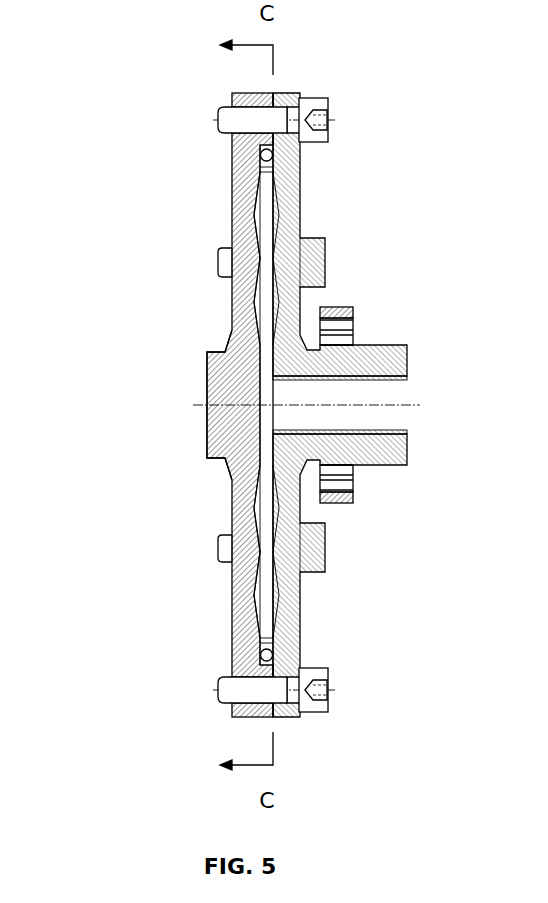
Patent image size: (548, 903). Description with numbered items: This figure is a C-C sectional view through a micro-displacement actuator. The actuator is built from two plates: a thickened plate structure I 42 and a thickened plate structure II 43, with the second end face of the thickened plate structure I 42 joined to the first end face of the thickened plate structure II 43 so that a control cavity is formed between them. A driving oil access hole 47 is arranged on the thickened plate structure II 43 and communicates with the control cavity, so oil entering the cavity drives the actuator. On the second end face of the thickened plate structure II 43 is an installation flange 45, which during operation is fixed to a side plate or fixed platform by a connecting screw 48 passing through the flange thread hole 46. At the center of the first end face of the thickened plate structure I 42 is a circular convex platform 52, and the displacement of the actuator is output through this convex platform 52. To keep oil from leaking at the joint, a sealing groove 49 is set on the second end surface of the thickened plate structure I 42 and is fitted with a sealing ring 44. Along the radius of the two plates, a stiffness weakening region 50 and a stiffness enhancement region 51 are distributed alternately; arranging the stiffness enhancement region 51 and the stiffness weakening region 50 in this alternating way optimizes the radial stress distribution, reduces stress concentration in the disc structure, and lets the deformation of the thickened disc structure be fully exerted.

The thickened plate structure I 42 is at (242, 147).
The thickened plate structure II 43 is at (298, 151).
The sealing ring 44 is at (280, 163).
The installation flange 45 is at (338, 310).
The flange thread hole 46 is at (353, 322).
The driving oil access hole 47 is at (353, 442).
The connecting screw 48 is at (327, 678).
The sealing groove 49 is at (230, 670).
The stiffness weakening region 50 is at (262, 592).
The stiffness enhancement region 51 is at (218, 538).
The circular convex platform 52 is at (230, 408).